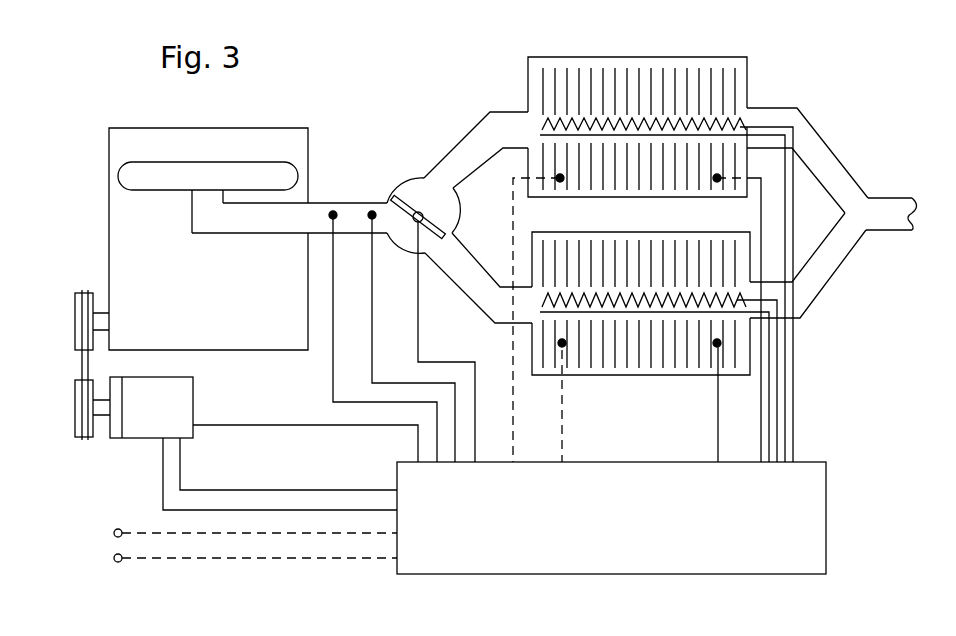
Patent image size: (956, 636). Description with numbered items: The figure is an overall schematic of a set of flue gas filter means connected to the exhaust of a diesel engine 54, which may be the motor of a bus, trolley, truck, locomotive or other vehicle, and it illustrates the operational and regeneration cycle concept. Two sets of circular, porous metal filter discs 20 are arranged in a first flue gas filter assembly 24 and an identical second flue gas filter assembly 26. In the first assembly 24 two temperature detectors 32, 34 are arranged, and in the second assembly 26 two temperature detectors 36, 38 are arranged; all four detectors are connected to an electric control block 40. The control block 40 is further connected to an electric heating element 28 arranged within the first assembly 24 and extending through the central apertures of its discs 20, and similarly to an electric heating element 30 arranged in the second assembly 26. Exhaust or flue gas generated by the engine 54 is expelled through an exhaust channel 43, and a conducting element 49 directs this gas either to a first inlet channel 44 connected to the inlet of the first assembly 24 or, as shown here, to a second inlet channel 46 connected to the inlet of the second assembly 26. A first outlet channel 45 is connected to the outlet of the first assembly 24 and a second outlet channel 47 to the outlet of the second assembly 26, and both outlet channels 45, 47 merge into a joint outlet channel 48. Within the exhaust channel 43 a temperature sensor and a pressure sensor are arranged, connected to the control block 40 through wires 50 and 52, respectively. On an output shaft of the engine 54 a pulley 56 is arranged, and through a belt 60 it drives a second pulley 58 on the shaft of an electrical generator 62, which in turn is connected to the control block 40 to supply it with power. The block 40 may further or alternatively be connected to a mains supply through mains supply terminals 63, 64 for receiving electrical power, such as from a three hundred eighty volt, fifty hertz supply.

The porous filter discs 20 is at (749, 56).
The first flue gas filter assembly 24 is at (628, 51).
The second flue gas filter assembly 26 is at (642, 388).
The heating element 28 is at (744, 110).
The heating element 30 is at (777, 308).
The temperature detector 32 is at (562, 180).
The temperature detector 34 is at (717, 180).
The temperature detector 36 is at (564, 350).
The temperature detector 38 is at (712, 350).
The electric control block 40 is at (808, 512).
The exhaust channel 43 is at (313, 212).
The first inlet channel 44 is at (475, 138).
The first outlet channel 45 is at (829, 162).
The second inlet channel 46 is at (468, 282).
The second outlet channel 47 is at (817, 282).
The joint outlet channel 48 is at (879, 222).
The conducting element 49 is at (403, 184).
The wire 50 is at (334, 366).
The wire 52 is at (372, 364).
The diesel engine 54 is at (136, 141).
The pulley 56 is at (69, 302).
The motor pulley 58 is at (72, 438).
The belt 60 is at (92, 438).
The electrical generator 62 is at (196, 392).
The mains supply terminal 63 is at (114, 534).
The mains supply terminal 64 is at (115, 556).